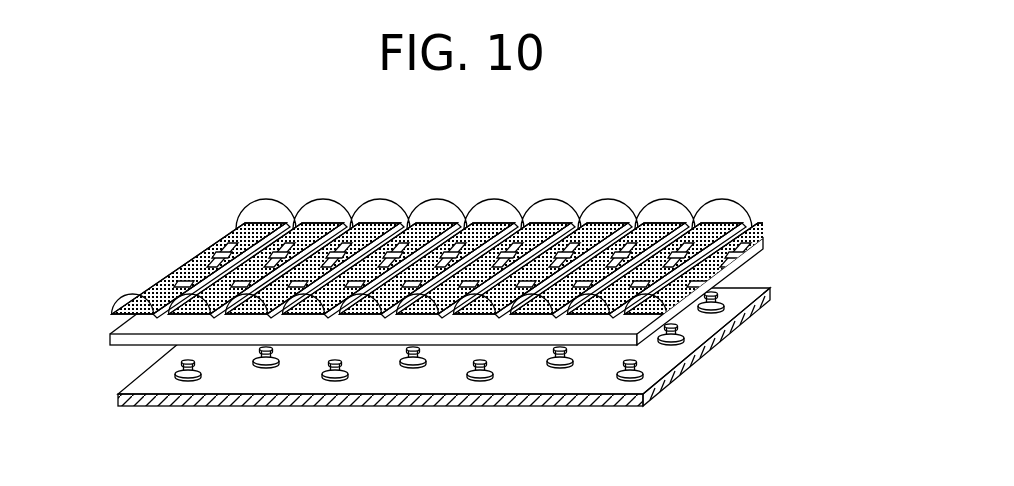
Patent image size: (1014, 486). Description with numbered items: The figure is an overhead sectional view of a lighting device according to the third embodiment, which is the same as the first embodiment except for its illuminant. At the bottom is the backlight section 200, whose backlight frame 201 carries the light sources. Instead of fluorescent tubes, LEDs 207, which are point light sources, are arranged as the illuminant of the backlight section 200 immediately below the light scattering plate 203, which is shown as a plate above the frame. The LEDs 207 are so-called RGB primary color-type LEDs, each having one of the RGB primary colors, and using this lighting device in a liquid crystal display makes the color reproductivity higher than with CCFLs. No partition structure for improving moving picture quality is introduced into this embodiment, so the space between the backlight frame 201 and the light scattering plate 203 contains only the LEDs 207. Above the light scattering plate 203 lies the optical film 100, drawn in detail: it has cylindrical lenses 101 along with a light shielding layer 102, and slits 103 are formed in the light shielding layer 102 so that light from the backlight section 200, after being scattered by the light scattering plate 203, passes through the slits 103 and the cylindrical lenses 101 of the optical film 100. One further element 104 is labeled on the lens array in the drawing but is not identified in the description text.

The optical film 100 is at (501, 241).
The cylindrical lenses 101 is at (458, 232).
The light shielding layer 102 is at (458, 232).
The slits 103 is at (439, 224).
The lenticular lens 104 is at (670, 226).
The backlight section 200 is at (400, 384).
The backlight frame 201 is at (242, 404).
The light scattering plate 203 is at (770, 243).
The LEDs 207 is at (413, 370).